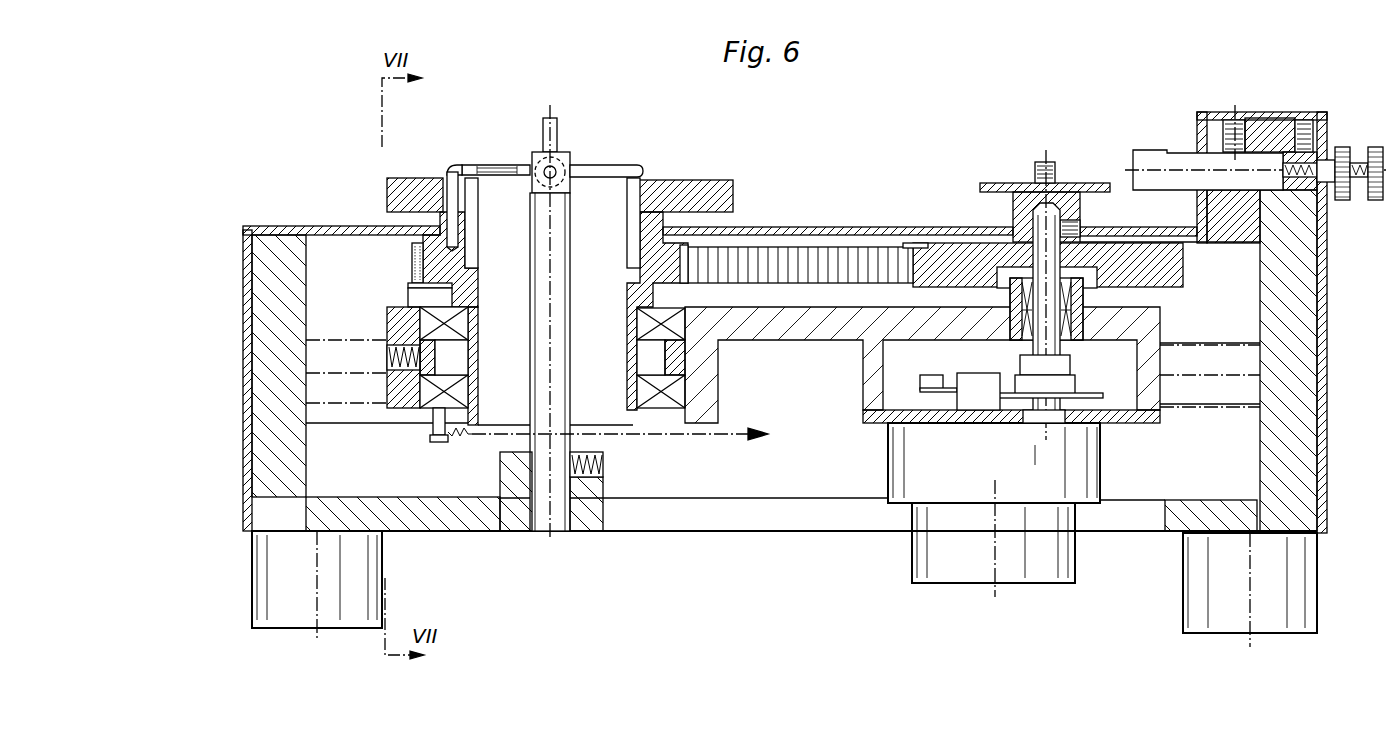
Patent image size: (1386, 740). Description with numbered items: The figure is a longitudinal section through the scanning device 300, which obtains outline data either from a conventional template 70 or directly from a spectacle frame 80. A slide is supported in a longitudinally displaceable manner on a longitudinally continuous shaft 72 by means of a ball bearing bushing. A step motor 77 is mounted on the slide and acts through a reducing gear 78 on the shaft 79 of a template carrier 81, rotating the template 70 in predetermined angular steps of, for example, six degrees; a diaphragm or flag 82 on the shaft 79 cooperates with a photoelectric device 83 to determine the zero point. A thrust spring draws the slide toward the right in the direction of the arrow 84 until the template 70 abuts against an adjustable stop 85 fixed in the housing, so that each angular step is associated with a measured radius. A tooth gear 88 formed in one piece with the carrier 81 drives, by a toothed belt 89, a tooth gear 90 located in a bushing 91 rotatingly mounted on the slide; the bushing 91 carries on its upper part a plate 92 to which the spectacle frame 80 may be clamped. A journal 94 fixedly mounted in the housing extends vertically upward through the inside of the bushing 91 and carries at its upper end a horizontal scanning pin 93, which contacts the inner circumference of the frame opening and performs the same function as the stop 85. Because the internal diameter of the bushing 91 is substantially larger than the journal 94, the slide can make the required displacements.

The scanning device 300 is at (993, 101).
The template 70 is at (1087, 186).
The shaft 72 is at (345, 357).
The step motor 77 is at (1063, 567).
The reducing gear 78 is at (1087, 470).
The shaft 79 is at (1122, 423).
The spectacle frame 80 is at (625, 164).
The template carrier 81 is at (1013, 209).
The diaphragm or flag 82 is at (1093, 392).
The stop 83 is at (965, 375).
The thrust spring 84 is at (722, 438).
The adjustable stop 85 is at (1182, 155).
The tooth gear 88 is at (1163, 290).
The toothed belt 89 is at (808, 246).
The tooth gear 90 is at (430, 273).
The bushing 91 is at (473, 358).
The plate 92 is at (698, 180).
The scanning pin 93 is at (477, 163).
The journal 94 is at (558, 395).